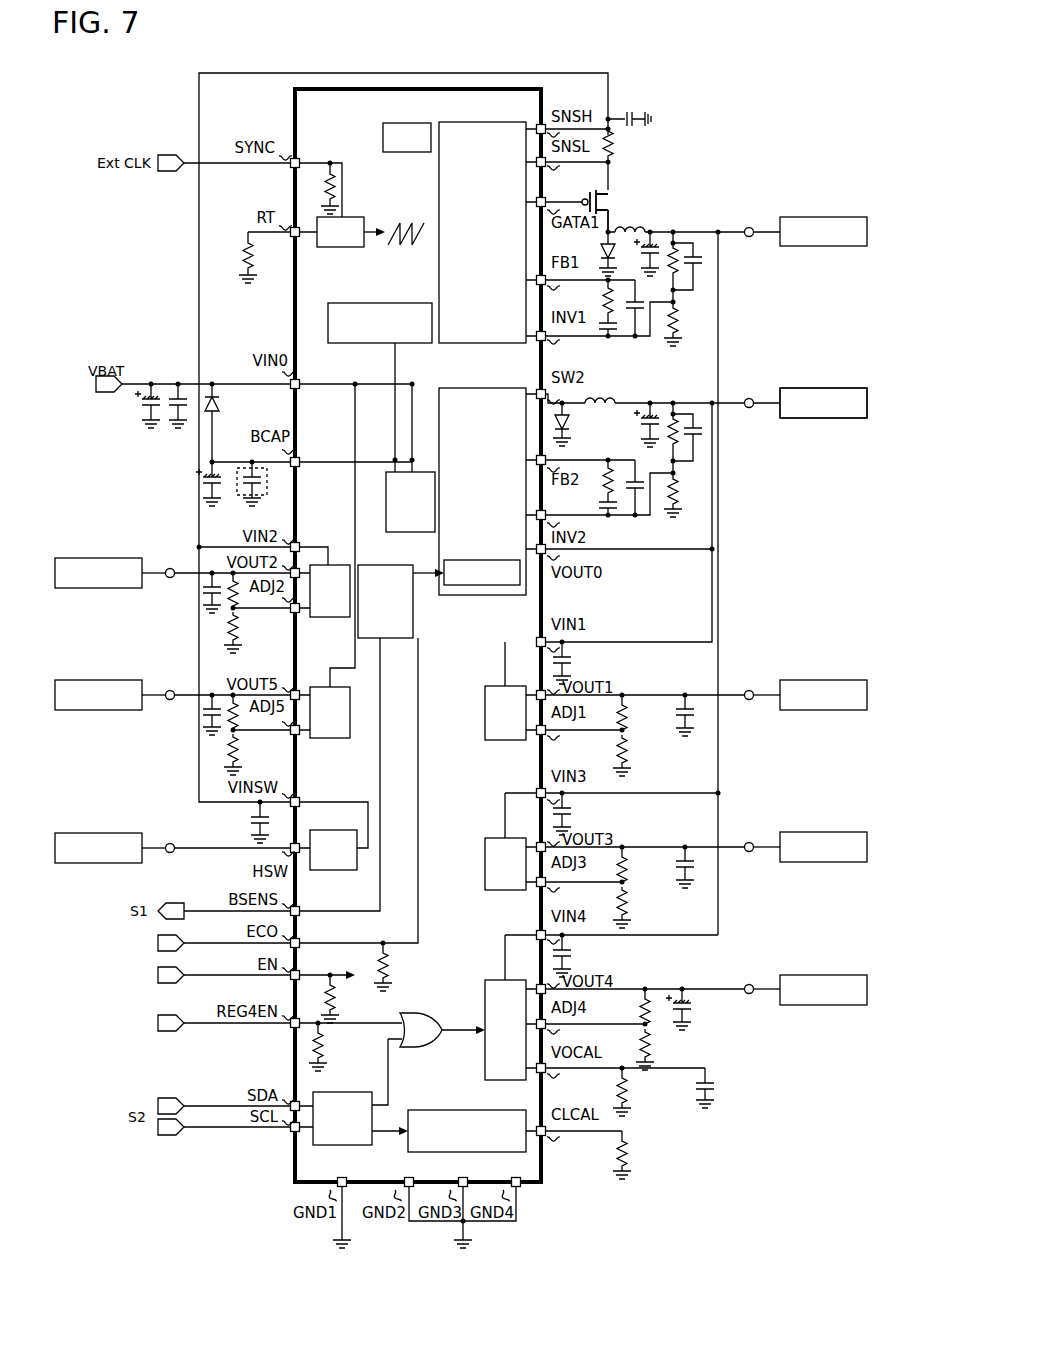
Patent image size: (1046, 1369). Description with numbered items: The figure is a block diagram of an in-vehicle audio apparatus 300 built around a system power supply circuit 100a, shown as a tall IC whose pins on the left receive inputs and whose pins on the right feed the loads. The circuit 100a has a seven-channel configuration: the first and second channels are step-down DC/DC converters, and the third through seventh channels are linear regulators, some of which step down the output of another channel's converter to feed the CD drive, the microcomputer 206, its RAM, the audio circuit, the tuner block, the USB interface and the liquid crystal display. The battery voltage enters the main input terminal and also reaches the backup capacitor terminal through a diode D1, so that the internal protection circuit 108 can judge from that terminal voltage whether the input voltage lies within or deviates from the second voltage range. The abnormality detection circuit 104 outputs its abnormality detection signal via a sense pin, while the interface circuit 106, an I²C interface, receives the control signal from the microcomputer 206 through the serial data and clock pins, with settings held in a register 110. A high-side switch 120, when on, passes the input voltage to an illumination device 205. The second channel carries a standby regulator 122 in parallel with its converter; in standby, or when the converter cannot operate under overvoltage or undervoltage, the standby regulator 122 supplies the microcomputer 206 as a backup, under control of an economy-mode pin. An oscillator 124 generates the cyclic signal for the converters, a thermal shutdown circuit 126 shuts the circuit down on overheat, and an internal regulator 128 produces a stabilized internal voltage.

The in-vehicle audio apparatus 300 is at (852, 63).
The system power supply circuit 100a is at (294, 1159).
The abnormality detection circuit 104 is at (401, 620).
The interface circuit 106 is at (356, 1092).
The internal protection circuit 108 is at (411, 519).
The register 110 is at (446, 1115).
The high-side switch 120 is at (333, 866).
The standby regulator 122 is at (458, 557).
The oscillator 124 is at (370, 247).
The thermal shutdown circuit 126 is at (407, 154).
The internal regulator 128 is at (398, 301).
The microcomputer 206 is at (823, 433).
The illumination device 205 is at (138, 863).
The diode D1 is at (224, 408).